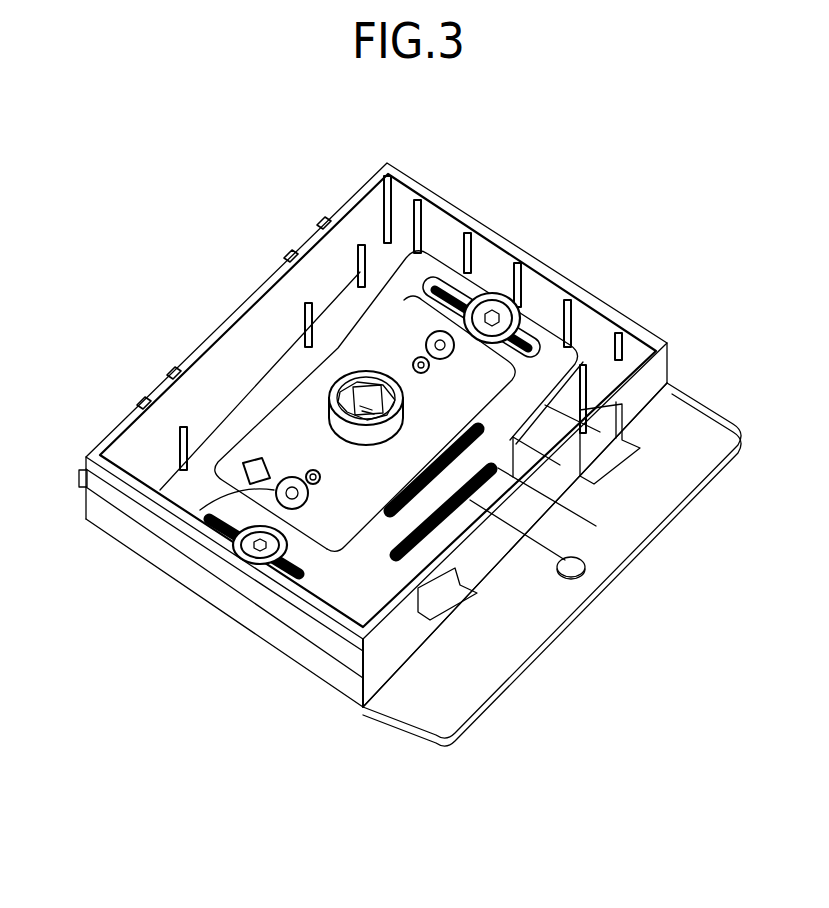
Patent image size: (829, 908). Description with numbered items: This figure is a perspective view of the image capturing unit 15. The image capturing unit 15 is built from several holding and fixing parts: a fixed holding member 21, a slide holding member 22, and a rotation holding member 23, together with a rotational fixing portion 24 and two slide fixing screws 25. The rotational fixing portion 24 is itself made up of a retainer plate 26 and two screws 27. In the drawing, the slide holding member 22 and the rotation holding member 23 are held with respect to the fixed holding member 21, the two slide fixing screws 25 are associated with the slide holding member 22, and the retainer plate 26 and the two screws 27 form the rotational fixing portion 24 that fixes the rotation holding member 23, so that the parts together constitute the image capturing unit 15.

The image capturing unit 15 is at (623, 156).
The fixed holding member 21 is at (412, 179).
The slide holding member 22 is at (383, 295).
The rotation holding member 23 is at (342, 390).
The rotational fixing portion 24 is at (325, 572).
The slide fixing screws 25 is at (483, 297).
The retainer plate 26 is at (353, 537).
The screws 27 is at (430, 290).